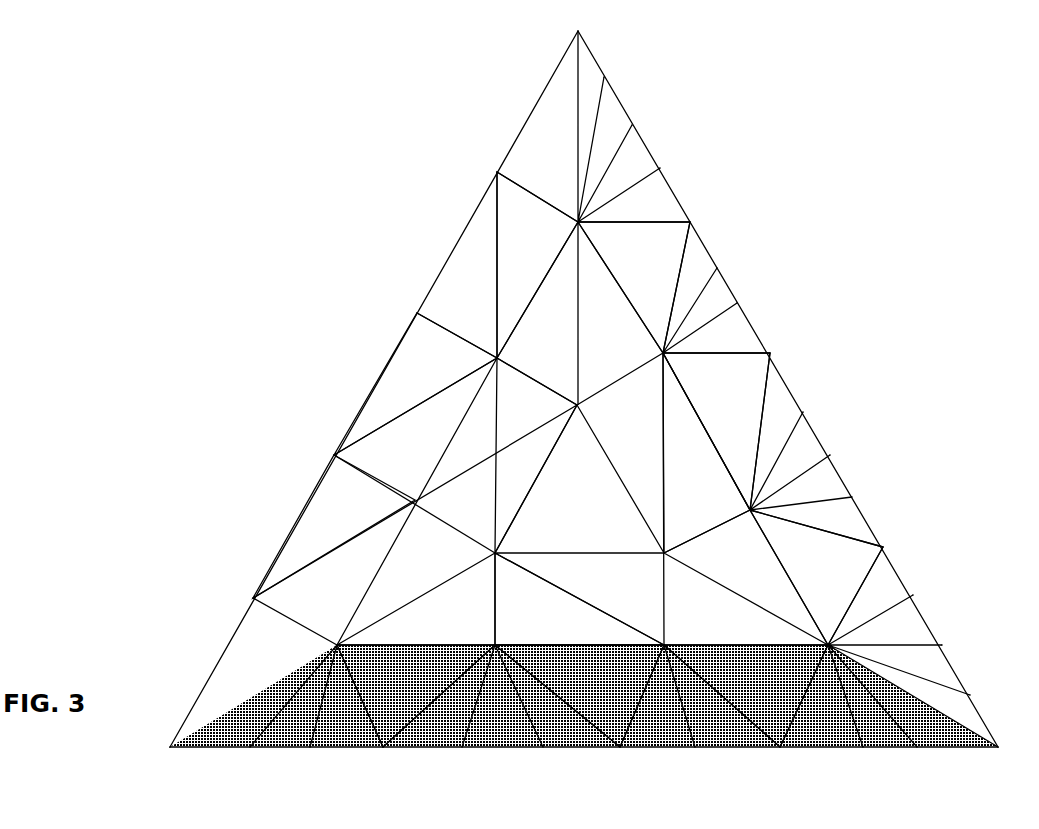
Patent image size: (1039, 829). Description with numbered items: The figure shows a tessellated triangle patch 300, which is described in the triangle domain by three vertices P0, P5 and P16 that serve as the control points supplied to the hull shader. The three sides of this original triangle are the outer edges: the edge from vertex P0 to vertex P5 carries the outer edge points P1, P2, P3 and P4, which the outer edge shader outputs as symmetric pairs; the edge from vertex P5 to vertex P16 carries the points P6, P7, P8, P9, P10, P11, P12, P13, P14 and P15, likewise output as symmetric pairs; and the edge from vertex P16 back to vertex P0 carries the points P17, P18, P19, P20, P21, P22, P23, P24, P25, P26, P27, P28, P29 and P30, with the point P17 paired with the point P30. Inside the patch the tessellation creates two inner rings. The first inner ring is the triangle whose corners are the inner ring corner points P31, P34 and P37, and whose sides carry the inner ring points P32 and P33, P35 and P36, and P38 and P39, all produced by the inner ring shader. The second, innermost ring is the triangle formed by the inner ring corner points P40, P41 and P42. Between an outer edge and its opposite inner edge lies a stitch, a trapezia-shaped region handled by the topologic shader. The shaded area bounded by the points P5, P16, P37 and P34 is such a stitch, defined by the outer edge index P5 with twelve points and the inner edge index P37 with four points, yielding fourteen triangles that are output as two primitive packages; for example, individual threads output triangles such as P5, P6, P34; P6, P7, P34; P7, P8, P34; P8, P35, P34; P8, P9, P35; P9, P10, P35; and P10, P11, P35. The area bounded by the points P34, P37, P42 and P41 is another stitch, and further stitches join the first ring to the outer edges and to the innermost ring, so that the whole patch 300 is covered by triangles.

The tessellated triangle patch 300 is at (1027, 20).
The vertex P0 is at (564, 30).
The outer edge point P1 is at (486, 162).
The outer edge point P2 is at (404, 306).
The outer edge point P3 is at (321, 451).
The outer edge point P4 is at (241, 595).
The vertex P5 is at (173, 760).
The outer edge point P6 is at (239, 760).
The outer edge point P7 is at (308, 760).
The outer edge point P8 is at (379, 760).
The outer edge point P9 is at (464, 760).
The outer edge point P10 is at (542, 759).
The outer edge point P11 is at (627, 759).
The outer edge point P12 is at (702, 759).
The outer edge point P13 is at (784, 759).
The outer edge point P14 is at (864, 759).
The outer edge point P15 is at (929, 759).
The vertex P16 is at (999, 759).
The outer edge point P17 is at (990, 693).
The outer edge point P18 is at (962, 643).
The outer edge point P19 is at (931, 590).
The outer edge point P20 is at (901, 541).
The outer edge point P21 is at (871, 490).
The outer edge point P22 is at (848, 448).
The outer edge point P23 is at (820, 402).
The outer edge point P24 is at (788, 346).
The outer edge point P25 is at (756, 295).
The outer edge point P26 is at (735, 258).
The outer edge point P27 is at (707, 212).
The outer edge point P28 is at (676, 161).
The outer edge point P29 is at (648, 114).
The outer edge point P30 is at (622, 70).
The inner ring corner point P31 is at (537, 265).
The inner ring point P32 is at (415, 384).
The inner ring point P33 is at (334, 526).
The inner ring corner point P34 is at (416, 696).
The inner ring point P35 is at (579, 696).
The inner ring point P36 is at (746, 696).
The inner ring corner point P37 is at (816, 577).
The inner ring point P38 is at (716, 431).
The inner ring point P39 is at (634, 287).
The inner ring corner point P40 is at (536, 455).
The inner ring corner point P41 is at (579, 599).
The inner ring corner point P42 is at (706, 453).